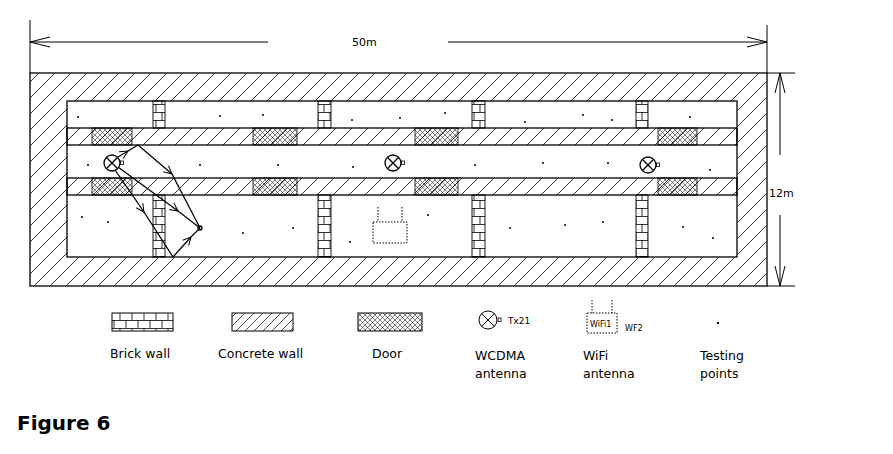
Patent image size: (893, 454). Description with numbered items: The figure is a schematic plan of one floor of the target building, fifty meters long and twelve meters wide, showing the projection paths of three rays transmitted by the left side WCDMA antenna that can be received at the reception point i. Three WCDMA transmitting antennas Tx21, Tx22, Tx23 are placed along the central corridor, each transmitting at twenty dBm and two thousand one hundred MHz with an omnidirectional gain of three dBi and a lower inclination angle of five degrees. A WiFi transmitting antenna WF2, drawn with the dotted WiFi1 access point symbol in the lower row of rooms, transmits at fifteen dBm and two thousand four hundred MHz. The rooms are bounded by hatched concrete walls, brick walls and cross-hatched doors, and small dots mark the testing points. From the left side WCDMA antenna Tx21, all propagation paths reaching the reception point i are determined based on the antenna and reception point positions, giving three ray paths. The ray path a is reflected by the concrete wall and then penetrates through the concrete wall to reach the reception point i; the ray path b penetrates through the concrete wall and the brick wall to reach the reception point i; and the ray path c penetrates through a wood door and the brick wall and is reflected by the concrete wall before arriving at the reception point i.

The WCDMA transmitting antenna Tx21 is at (129, 163).
The WCDMA transmitting antenna Tx22 is at (413, 163).
The WCDMA transmitting antenna Tx23 is at (666, 165).
The WiFi antenna WiFi1 is at (390, 225).
The WiFi transmitting antenna WF2 is at (428, 237).
The ray path a is at (159, 186).
The ray path b is at (159, 197).
The ray path c is at (157, 213).
The reception point i is at (204, 229).